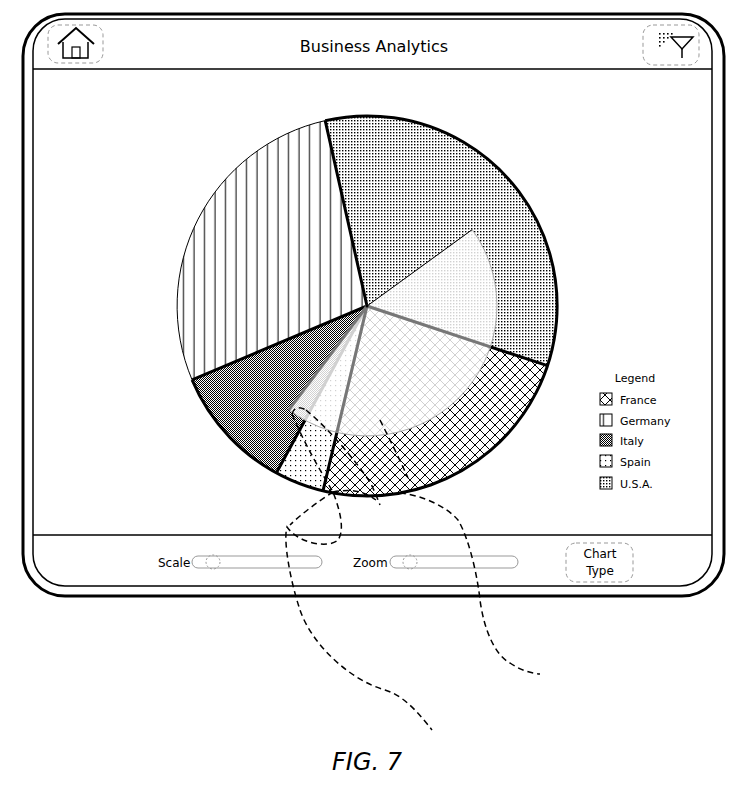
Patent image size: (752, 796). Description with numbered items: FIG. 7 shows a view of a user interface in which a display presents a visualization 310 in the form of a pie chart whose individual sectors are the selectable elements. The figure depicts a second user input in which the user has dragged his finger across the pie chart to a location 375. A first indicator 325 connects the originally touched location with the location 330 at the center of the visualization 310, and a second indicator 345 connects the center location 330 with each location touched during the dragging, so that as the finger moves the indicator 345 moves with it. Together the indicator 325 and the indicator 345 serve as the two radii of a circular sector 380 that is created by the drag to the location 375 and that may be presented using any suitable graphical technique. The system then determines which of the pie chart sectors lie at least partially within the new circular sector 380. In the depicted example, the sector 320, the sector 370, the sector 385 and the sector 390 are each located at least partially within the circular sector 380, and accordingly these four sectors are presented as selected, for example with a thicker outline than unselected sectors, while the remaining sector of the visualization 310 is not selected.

The visualization 310 is at (352, 309).
The sector 320 is at (497, 163).
The indicator 325 is at (415, 271).
The location 330 is at (367, 305).
The indicator 345 is at (320, 368).
The sector 370 is at (490, 455).
The location 375 is at (290, 425).
The circular sector 380 is at (449, 371).
The sector 385 is at (300, 487).
The sector 390 is at (231, 443).